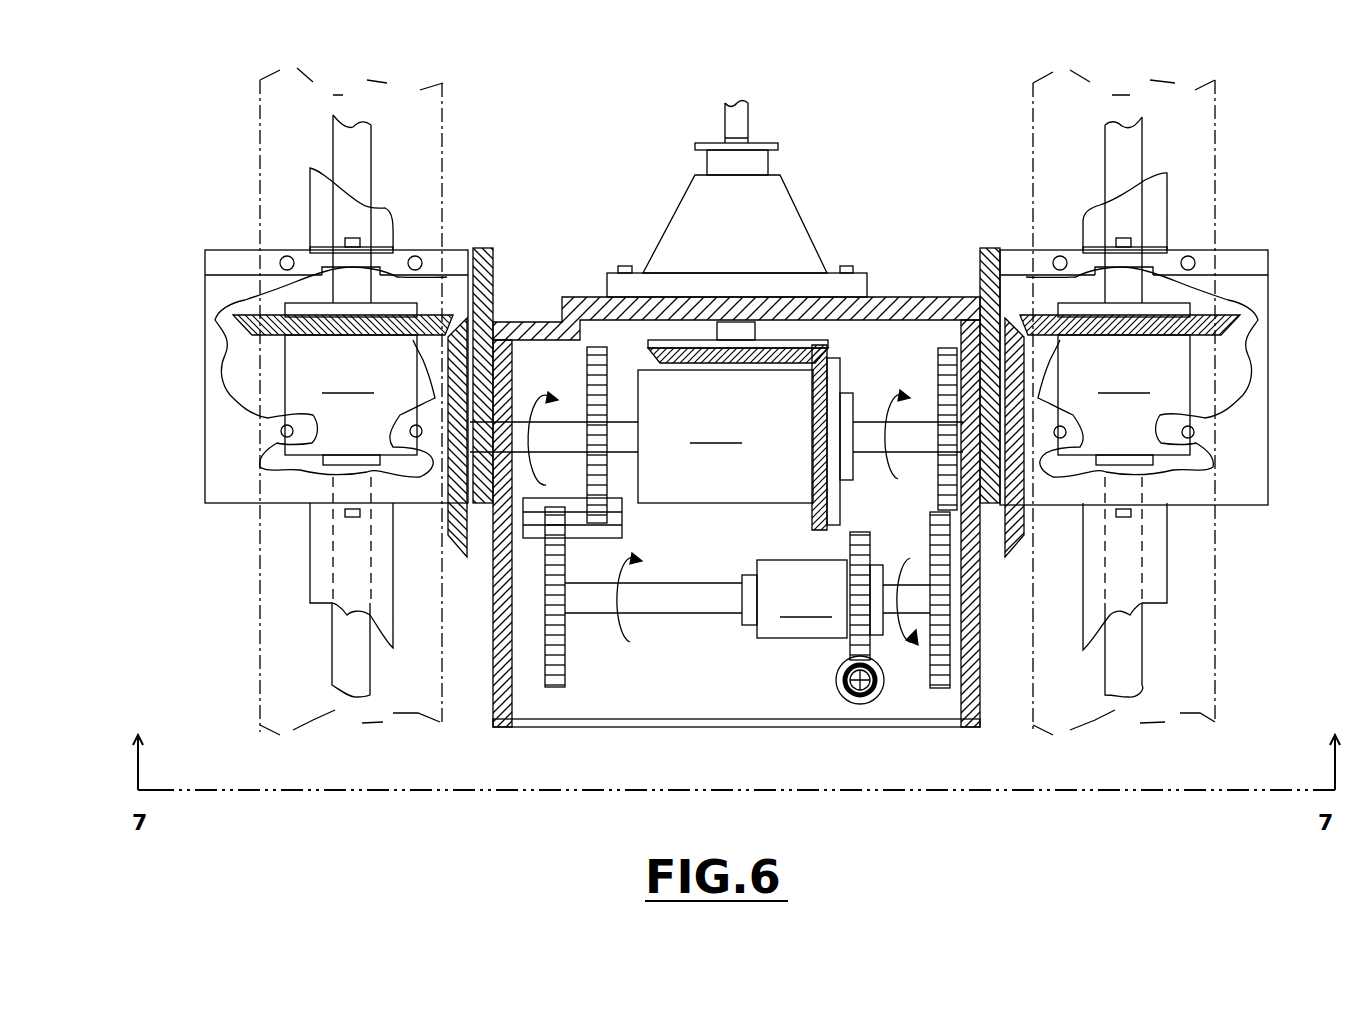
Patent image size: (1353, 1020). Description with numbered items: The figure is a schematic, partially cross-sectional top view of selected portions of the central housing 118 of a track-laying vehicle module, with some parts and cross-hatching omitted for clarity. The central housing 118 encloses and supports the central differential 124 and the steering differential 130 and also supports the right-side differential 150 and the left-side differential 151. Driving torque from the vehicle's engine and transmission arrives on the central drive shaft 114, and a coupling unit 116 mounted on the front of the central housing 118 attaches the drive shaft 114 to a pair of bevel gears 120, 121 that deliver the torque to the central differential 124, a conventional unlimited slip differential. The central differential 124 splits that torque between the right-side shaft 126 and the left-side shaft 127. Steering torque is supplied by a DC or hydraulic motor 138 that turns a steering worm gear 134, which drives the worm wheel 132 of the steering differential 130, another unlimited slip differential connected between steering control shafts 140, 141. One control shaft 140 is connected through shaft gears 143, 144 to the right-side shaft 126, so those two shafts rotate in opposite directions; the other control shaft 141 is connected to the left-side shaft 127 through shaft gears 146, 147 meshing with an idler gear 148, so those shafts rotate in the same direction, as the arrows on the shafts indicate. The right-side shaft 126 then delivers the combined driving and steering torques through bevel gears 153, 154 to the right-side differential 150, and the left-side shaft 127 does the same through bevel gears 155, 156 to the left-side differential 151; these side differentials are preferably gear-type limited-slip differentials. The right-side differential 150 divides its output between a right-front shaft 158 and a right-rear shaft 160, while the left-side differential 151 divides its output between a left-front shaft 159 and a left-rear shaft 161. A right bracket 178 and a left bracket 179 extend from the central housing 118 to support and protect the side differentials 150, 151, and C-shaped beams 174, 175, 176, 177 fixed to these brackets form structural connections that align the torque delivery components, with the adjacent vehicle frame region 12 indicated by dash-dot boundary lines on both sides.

The vehicle frame region 12 is at (262, 709).
The central drive shaft 114 is at (740, 122).
The coupling unit 116 is at (688, 217).
The central housing 118 is at (885, 298).
The bevel gear 120 is at (818, 352).
The bevel gear 121 is at (812, 520).
The central differential 124 is at (725, 436).
The right-side shaft 126 is at (864, 430).
The left-side shaft 127 is at (620, 423).
The steering differential 130 is at (794, 599).
The worm wheel 132 is at (855, 640).
The steering worm gear 134 is at (876, 690).
The motor 138 is at (836, 682).
The steering control shaft 140 is at (920, 597).
The steering control shaft 141 is at (720, 597).
The shaft gear 143 is at (940, 545).
The shaft gear 144 is at (935, 480).
The shaft gear 146 is at (558, 670).
The shaft gear 147 is at (607, 470).
The idler gear 148 is at (615, 520).
The right-side differential 150 is at (1124, 384).
The left-side differential 151 is at (343, 384).
The bevel gear 153 is at (1015, 545).
The bevel gear 154 is at (1243, 323).
The bevel gear 155 is at (465, 548).
The bevel gear 156 is at (430, 318).
The right-front shaft 158 is at (1112, 155).
The left-front shaft 159 is at (360, 147).
The right-rear shaft 160 is at (1130, 650).
The left-rear shaft 161 is at (350, 645).
The C-shaped beam 174 is at (1085, 233).
The C-shaped beam 175 is at (318, 210).
The C-shaped beam 176 is at (1160, 577).
The C-shaped beam 177 is at (318, 554).
The right bracket 178 is at (1258, 492).
The left bracket 179 is at (240, 475).